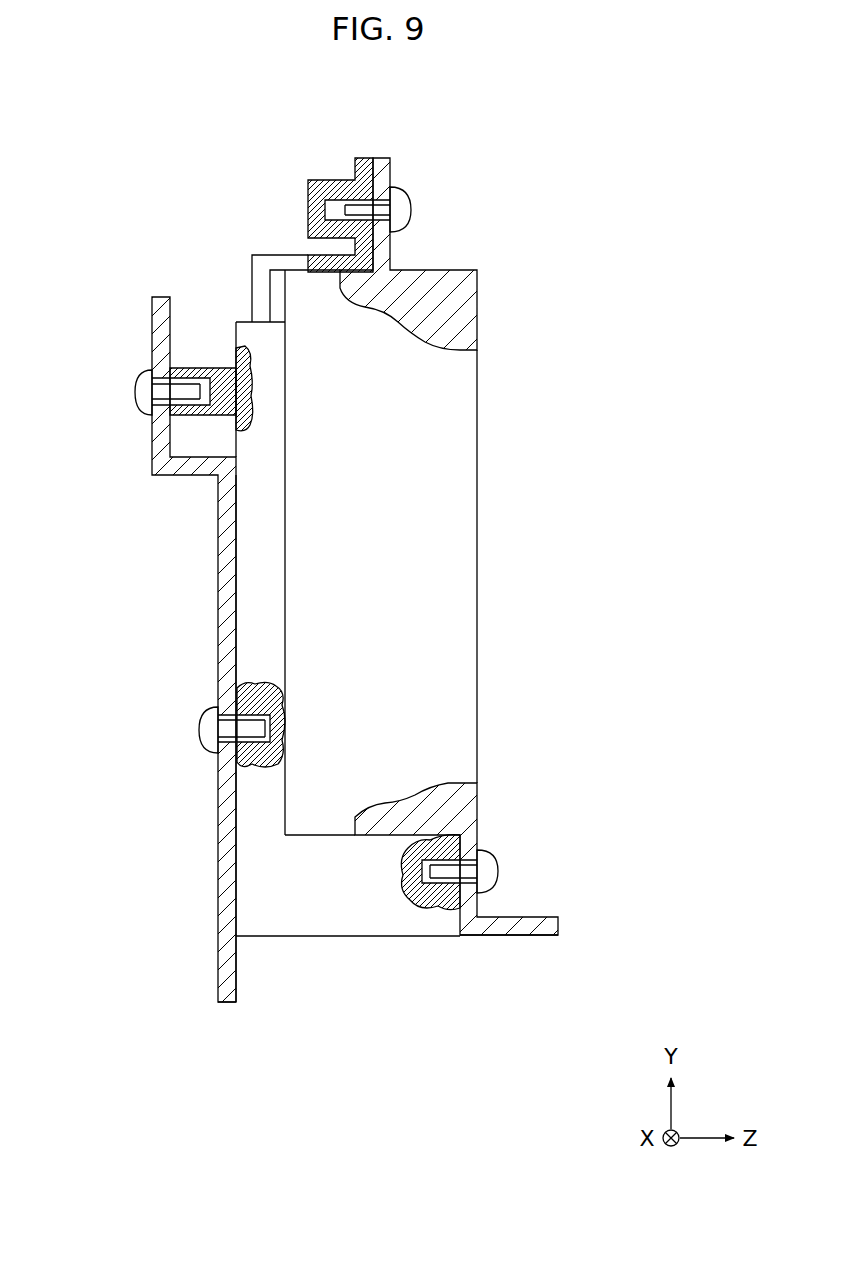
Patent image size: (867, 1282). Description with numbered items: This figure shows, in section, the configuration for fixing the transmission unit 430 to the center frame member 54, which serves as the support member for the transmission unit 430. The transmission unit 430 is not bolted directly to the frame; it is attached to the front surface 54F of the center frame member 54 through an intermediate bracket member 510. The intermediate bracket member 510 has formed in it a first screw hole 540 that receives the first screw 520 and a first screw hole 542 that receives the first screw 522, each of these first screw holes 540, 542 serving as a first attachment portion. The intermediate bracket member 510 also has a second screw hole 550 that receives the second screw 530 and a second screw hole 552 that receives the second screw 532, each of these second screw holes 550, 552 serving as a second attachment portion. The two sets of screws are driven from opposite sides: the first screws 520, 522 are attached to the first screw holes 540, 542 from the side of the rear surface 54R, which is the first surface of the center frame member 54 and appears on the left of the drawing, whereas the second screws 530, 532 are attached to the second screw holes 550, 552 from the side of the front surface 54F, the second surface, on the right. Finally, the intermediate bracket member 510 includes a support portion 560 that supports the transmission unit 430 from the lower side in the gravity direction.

The center frame member 54 is at (216, 931).
The front surface 54F is at (237, 907).
The rear surface 54R is at (222, 985).
The transmission unit 430 is at (468, 553).
The intermediate bracket member 510 is at (382, 942).
The first screw 520 is at (137, 392).
The first screw 522 is at (205, 729).
The second screw 530 is at (403, 209).
The second screw 532 is at (497, 872).
The first screw hole 540 is at (190, 389).
The first screw hole 542 is at (260, 720).
The second screw hole 550 is at (359, 201).
The second screw hole 552 is at (446, 861).
The support portion 560 is at (312, 922).